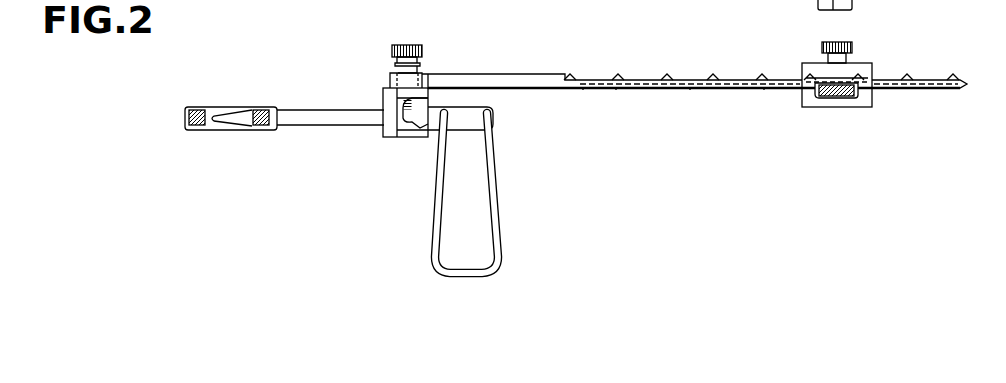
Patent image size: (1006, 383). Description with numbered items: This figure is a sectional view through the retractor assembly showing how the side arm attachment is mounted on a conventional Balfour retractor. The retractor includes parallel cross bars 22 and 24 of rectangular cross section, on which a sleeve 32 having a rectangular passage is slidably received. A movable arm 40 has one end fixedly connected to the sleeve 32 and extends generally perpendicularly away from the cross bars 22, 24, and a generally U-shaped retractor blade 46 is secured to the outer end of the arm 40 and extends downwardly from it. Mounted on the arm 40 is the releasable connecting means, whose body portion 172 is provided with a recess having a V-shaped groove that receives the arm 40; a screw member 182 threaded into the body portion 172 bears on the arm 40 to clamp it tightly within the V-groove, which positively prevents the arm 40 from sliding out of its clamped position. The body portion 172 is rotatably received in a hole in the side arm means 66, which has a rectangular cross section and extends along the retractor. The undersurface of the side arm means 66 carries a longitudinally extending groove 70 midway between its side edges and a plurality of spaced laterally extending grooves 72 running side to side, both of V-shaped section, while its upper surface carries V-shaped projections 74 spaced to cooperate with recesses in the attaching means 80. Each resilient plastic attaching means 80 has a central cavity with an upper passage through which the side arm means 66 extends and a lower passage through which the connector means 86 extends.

The cross bar 22 is at (278, 111).
The cross bar 24 is at (197, 107).
The sleeve 32 is at (259, 107).
The movable arm 40 is at (328, 127).
The retractor blade 46 is at (495, 180).
The side arm means 66 is at (528, 81).
The longitudinally extending groove 70 is at (637, 90).
The laterally extending grooves 72 is at (584, 90).
The projections 74 is at (717, 80).
The attaching means 80 is at (810, 104).
The connector means 86 is at (847, 99).
The body portion 172 is at (397, 139).
The screw member 182 is at (410, 48).